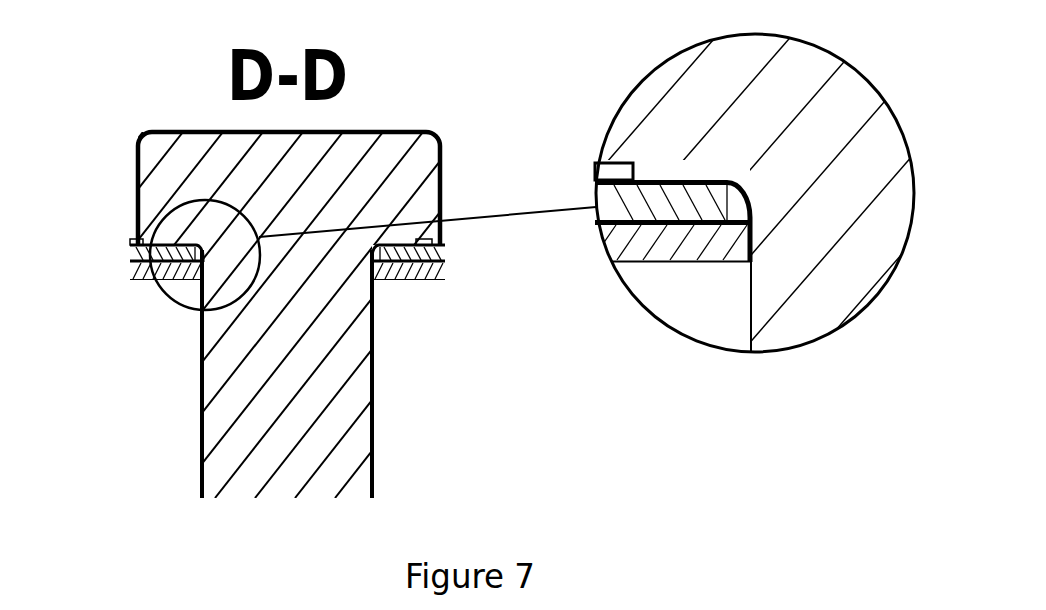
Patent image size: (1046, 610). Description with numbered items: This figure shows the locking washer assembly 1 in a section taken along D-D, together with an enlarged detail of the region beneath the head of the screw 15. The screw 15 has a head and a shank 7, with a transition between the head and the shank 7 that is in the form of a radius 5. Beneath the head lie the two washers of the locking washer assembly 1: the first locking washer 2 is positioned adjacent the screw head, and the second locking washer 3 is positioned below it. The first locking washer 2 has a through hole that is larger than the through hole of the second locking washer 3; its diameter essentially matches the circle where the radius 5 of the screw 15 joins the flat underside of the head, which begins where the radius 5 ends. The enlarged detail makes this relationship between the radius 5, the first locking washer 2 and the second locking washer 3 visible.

The locking washer assembly 1 is at (101, 244).
The first locking washer 2 is at (133, 252).
The second locking washer 3 is at (180, 270).
The radius 5 is at (200, 247).
The shank 7 is at (275, 372).
The screw 15 is at (186, 176).